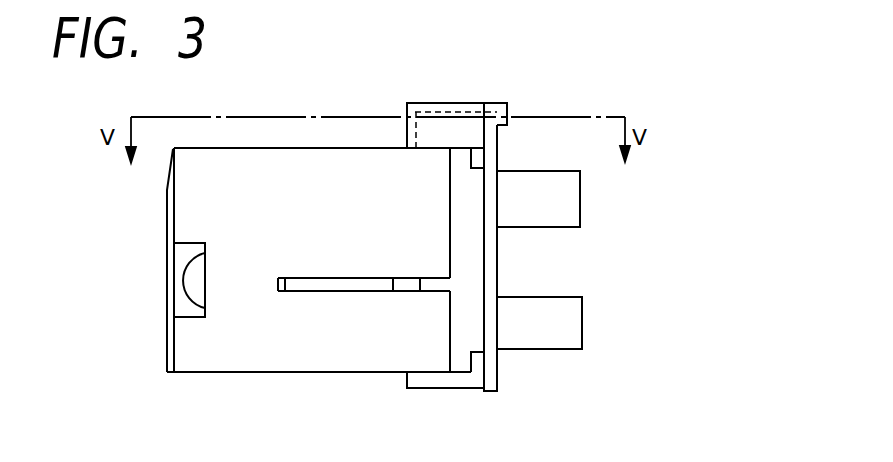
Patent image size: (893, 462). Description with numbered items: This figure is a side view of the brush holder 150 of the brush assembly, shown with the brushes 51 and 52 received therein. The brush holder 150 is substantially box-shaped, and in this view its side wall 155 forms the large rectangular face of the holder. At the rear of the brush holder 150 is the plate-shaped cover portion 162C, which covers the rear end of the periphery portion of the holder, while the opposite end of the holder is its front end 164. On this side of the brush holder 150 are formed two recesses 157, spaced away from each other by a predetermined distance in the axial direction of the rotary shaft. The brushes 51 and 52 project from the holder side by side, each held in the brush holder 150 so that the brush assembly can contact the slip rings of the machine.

The brush holder 150 is at (535, 141).
The side wall 155 is at (329, 340).
The recess 157 is at (478, 162).
The cover portion 162C is at (438, 102).
The front end 164 is at (452, 391).
The brush 52 is at (560, 205).
The brush 51 is at (562, 333).